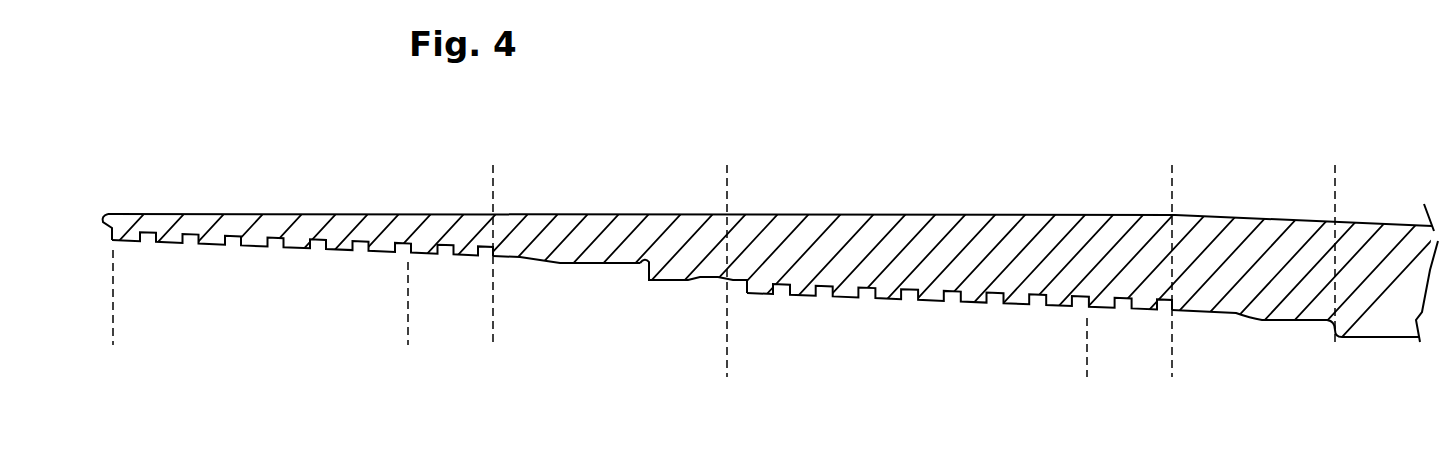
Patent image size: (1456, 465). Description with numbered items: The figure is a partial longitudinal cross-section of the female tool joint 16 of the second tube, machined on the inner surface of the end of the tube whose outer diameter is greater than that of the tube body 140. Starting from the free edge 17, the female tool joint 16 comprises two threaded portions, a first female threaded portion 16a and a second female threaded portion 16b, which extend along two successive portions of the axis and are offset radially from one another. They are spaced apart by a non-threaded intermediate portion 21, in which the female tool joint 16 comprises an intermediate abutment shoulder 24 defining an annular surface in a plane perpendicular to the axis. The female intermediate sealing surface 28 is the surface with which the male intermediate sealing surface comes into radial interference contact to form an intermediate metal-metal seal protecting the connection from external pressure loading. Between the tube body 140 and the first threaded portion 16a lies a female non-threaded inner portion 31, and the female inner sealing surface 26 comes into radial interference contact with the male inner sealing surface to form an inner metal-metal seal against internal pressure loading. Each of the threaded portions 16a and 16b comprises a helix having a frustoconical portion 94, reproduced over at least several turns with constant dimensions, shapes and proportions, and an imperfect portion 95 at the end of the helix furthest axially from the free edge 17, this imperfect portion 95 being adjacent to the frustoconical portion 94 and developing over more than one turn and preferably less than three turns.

The female tool joint 16 is at (903, 178).
The free edge 17 is at (104, 223).
The first female threaded portion 16a is at (978, 305).
The second female threaded portion 16b is at (253, 247).
The non-threaded intermediate portion 21 is at (727, 165).
The intermediate abutment shoulder 24 is at (645, 277).
The female inner sealing surface 26 is at (1265, 318).
The female intermediate sealing surface 28 is at (592, 265).
The female non-threaded inner portion 31 is at (1334, 165).
The frustoconical portion 94 is at (408, 352).
The imperfect portion 95 is at (493, 352).
The tube body 140 is at (1412, 285).